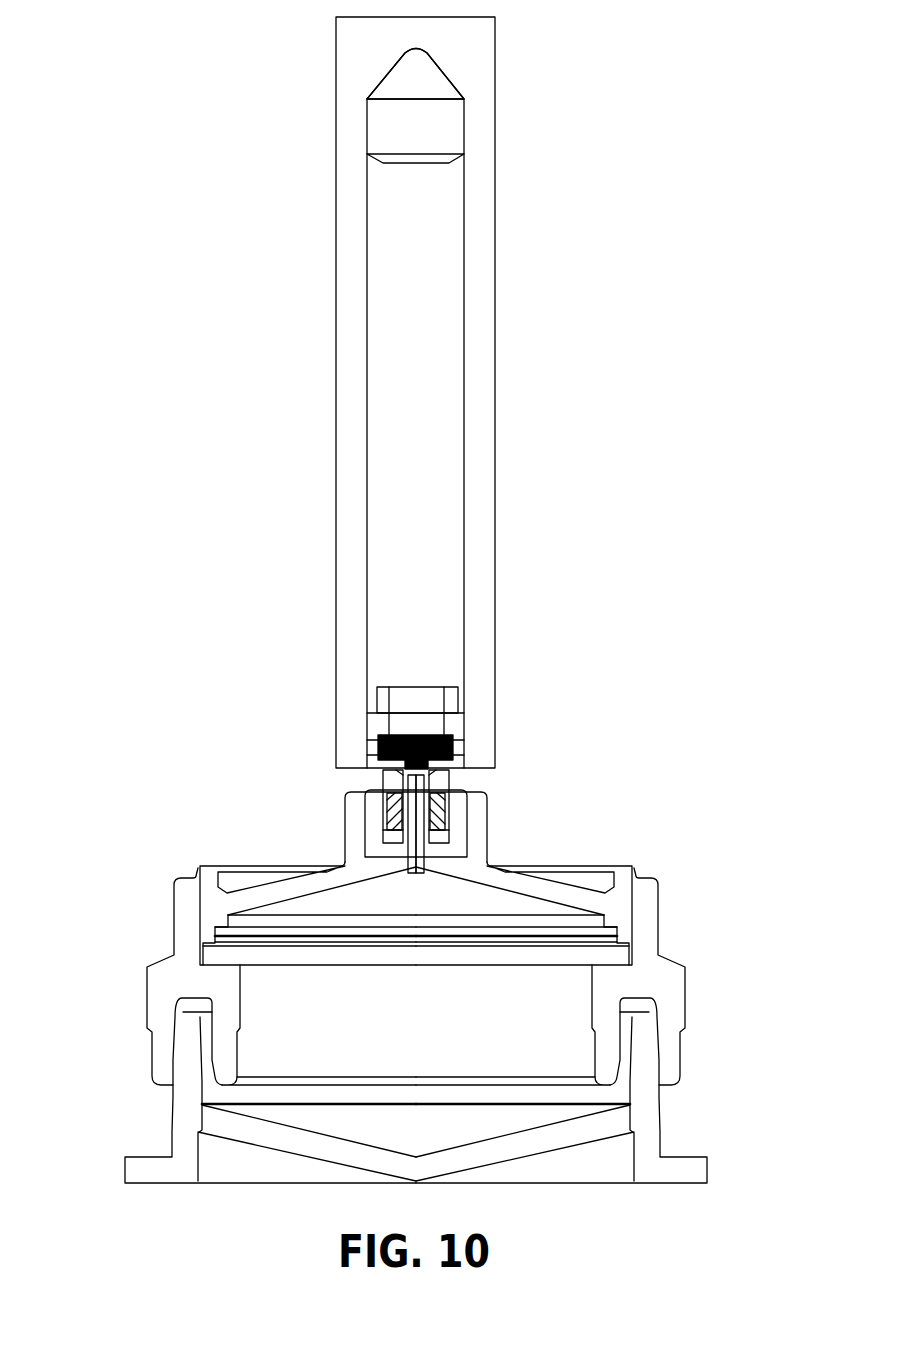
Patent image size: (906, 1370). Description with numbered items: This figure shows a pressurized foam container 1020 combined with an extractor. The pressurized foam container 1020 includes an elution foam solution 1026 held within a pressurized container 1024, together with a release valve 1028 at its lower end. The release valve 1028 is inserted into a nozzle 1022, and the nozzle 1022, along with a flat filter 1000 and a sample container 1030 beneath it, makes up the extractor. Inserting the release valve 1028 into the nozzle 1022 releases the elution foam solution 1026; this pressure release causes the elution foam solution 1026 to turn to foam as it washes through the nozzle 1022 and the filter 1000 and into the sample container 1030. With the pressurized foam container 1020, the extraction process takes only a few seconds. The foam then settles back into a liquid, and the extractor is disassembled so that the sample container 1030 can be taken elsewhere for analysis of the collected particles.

The flat filter 1000 is at (660, 937).
The pressurized foam container 1020 is at (335, 323).
The nozzle 1022 is at (344, 830).
The pressurized container 1024 is at (336, 122).
The elution foam solution 1026 is at (464, 316).
The release valve 1028 is at (460, 765).
The sample container 1030 is at (172, 1130).